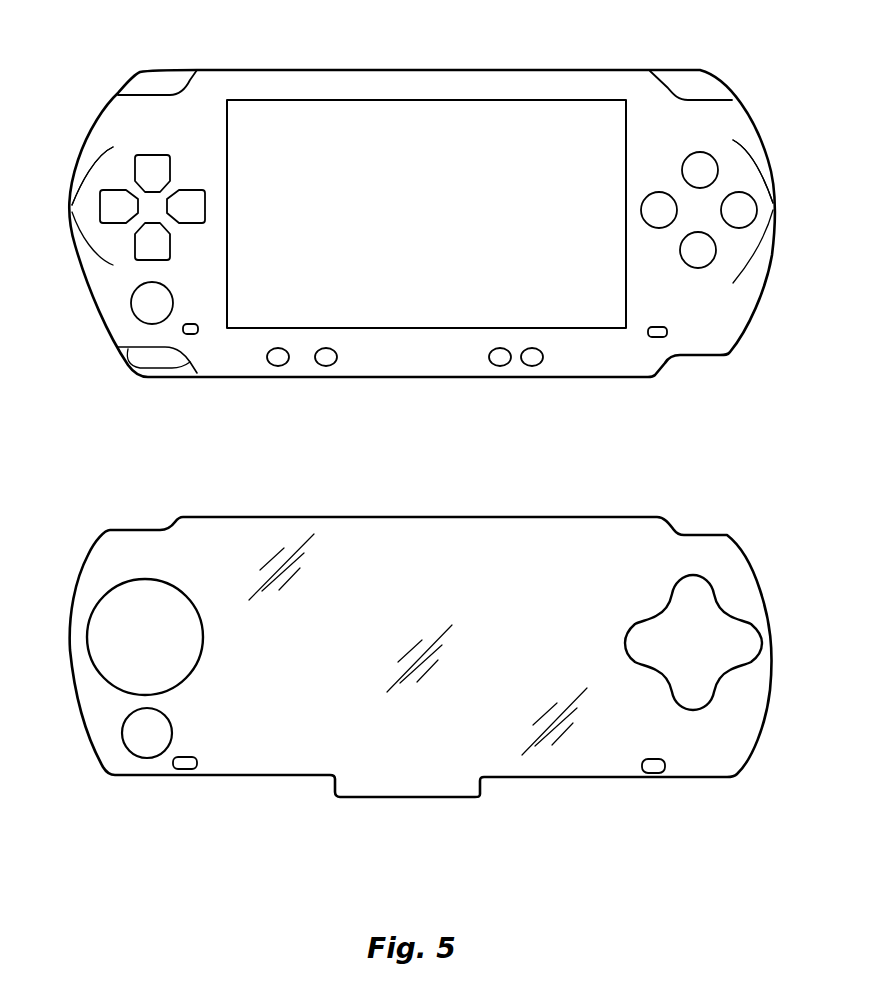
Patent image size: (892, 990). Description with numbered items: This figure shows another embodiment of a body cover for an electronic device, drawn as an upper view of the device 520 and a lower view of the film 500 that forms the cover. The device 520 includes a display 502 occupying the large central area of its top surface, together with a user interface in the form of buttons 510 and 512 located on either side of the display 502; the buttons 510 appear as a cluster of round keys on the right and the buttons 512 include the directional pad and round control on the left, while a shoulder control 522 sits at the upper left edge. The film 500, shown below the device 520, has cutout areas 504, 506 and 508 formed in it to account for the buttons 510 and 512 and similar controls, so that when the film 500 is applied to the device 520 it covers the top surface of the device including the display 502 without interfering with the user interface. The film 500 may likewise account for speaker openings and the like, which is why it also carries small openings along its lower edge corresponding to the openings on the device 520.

The film 500 is at (385, 543).
The display 502 is at (353, 133).
The cutout area 504 is at (130, 623).
The cutout area 506 is at (138, 733).
The cutout area 508 is at (697, 610).
The buttons 510 is at (780, 213).
The buttons 512 is at (150, 304).
The device 520 is at (580, 378).
The left shoulder button 522 is at (72, 207).